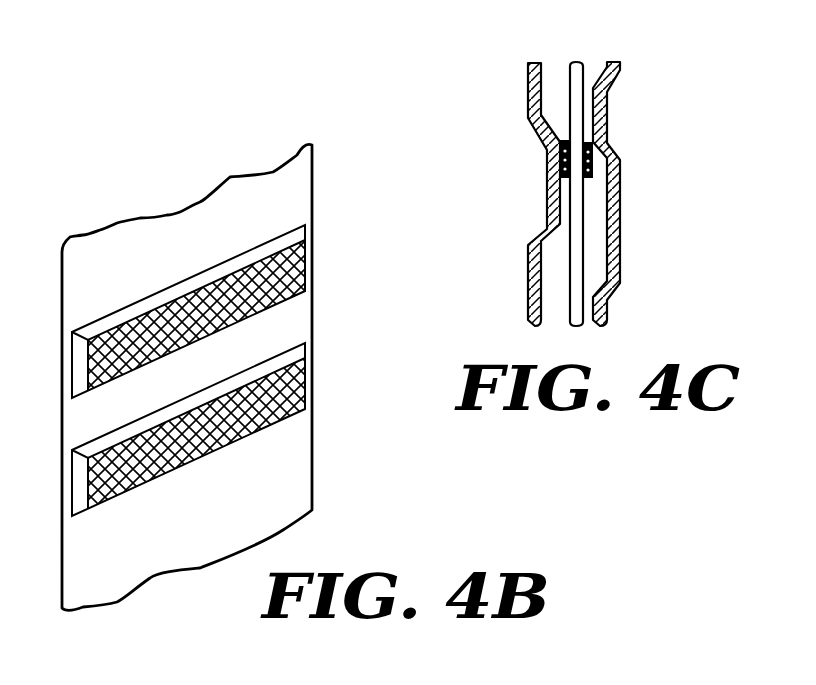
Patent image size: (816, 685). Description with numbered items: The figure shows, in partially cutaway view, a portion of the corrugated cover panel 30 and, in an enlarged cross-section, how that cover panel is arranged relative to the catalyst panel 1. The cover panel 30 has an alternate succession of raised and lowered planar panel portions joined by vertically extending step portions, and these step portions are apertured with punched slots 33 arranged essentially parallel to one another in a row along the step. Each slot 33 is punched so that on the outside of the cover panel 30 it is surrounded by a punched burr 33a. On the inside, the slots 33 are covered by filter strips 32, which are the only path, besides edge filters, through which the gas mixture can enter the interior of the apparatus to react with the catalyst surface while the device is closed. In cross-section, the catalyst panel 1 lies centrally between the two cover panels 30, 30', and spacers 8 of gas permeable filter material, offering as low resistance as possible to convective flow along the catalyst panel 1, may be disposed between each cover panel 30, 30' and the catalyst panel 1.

In FIG. 4C, the catalyst panel 1 is at (578, 76).
In FIG. 4C, the spacer 8 is at (593, 152).
In FIG. 4B, the cover panel 30 is at (157, 377).
In FIG. 4C, the cover panel 30 is at (512, 194).
In FIG. 4C, the cover panel 30' is at (634, 194).
In FIG. 4B, the filter strip 32 is at (288, 276).
In FIG. 4B, the punched slot 33 is at (52, 358).
In FIG. 4B, the punched burr 33a is at (75, 377).